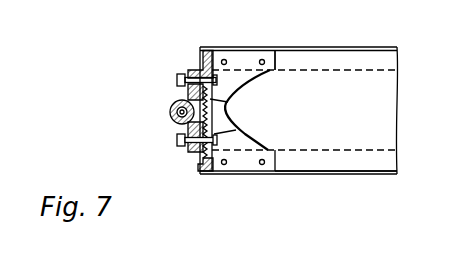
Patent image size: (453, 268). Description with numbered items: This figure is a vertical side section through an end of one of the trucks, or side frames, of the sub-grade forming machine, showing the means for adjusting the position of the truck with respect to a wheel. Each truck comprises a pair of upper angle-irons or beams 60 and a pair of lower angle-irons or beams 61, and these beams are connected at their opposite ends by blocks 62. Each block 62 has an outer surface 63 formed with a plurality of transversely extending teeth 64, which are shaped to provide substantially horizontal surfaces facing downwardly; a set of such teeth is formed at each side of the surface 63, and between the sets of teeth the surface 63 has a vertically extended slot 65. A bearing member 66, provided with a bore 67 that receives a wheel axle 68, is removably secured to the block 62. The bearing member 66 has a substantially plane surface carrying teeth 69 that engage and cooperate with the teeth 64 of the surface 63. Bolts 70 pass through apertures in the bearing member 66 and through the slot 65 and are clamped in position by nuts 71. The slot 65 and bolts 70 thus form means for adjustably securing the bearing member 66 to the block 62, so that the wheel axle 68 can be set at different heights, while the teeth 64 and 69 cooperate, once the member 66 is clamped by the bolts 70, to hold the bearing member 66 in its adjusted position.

The upper angle-irons or beams 60 is at (335, 62).
The lower angle-irons or beams 61 is at (332, 158).
The block 62 is at (270, 72).
The outer surface 63 is at (202, 65).
The teeth 64 is at (235, 93).
The slot 65 is at (228, 102).
The bearing member 66 is at (183, 92).
The bore 67 is at (172, 119).
The wheel axle 68 is at (175, 99).
The teeth 69 is at (183, 125).
The bolts 70 is at (180, 147).
The nuts 71 is at (236, 130).